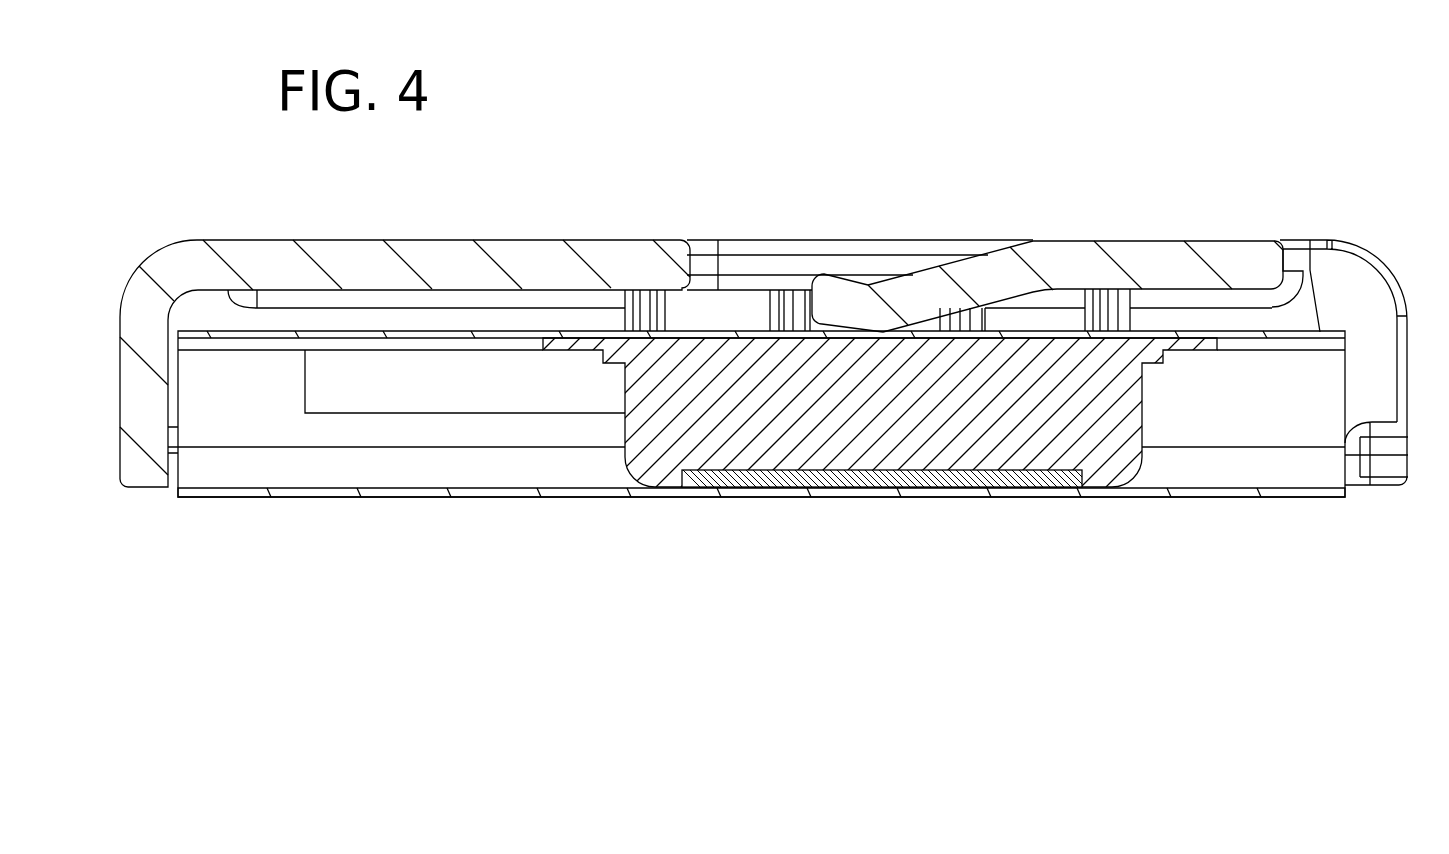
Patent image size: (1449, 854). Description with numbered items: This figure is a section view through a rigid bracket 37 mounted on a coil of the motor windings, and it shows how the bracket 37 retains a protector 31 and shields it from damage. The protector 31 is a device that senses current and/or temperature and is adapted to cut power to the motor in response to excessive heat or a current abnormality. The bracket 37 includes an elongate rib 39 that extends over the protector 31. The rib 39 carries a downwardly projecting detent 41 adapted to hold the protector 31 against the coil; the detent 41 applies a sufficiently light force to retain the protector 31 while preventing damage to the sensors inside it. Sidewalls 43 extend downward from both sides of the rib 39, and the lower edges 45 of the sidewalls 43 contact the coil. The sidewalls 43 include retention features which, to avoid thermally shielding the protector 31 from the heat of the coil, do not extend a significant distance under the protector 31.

The protector 31 is at (628, 468).
The bracket 37 is at (730, 159).
The elongate rib 39 is at (433, 240).
The detent 41 is at (920, 262).
The sidewalls 43 is at (438, 450).
The lower edges 45 is at (402, 493).